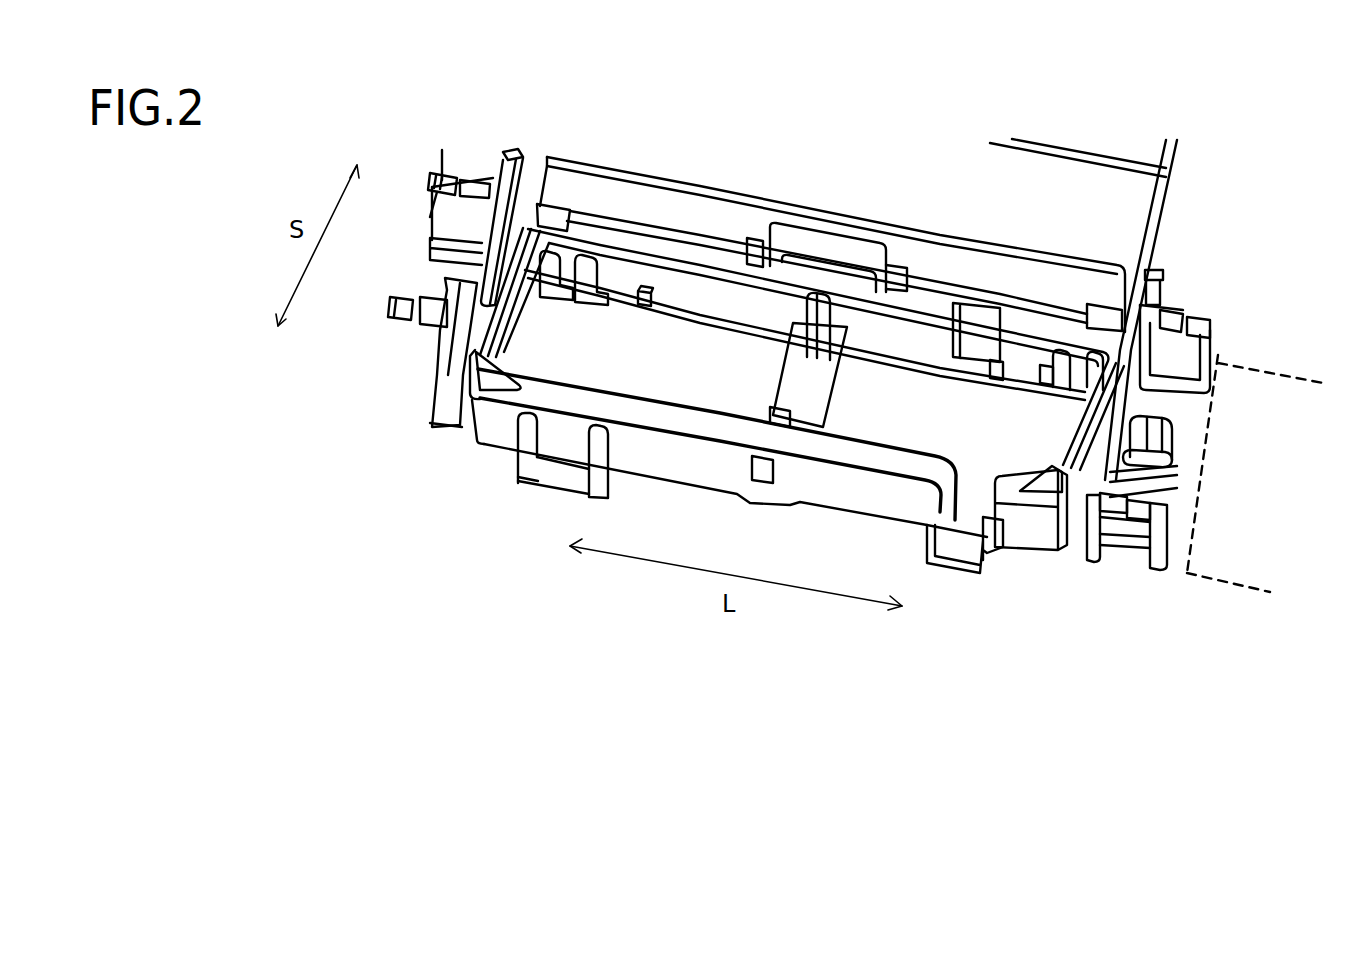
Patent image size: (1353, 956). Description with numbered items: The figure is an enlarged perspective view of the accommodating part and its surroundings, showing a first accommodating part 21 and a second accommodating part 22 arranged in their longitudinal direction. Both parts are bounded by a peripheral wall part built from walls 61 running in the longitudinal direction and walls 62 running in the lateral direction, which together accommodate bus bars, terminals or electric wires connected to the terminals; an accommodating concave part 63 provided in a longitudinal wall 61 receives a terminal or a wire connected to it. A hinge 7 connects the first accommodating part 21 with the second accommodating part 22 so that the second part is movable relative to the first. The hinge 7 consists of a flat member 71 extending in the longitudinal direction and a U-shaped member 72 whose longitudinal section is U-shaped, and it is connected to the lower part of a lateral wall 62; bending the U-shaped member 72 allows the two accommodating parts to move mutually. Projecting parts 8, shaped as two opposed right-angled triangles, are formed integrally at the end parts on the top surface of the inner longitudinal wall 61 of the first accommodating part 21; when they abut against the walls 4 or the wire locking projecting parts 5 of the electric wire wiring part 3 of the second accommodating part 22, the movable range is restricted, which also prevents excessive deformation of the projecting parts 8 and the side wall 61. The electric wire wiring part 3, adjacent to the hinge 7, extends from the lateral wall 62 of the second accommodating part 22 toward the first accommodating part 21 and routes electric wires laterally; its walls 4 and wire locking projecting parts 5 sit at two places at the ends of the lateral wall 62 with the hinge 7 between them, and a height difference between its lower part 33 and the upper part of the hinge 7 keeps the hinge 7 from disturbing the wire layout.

The electric wire wiring part 3 is at (418, 367).
The wall 4 is at (507, 177).
The wire locking projecting part 5 is at (437, 173).
The wall in the longitudinal direction 61 is at (685, 465).
The wall in the lateral direction 62 is at (517, 313).
The accommodating concave part 63 is at (953, 547).
The hinge 7 is at (1160, 440).
The flat member 71 is at (508, 362).
The U-shaped member 72 is at (447, 277).
The projecting part 8 is at (488, 378).
The first accommodating part 21 is at (823, 329).
The second accommodating part 22 is at (1257, 473).
The lower part 33 is at (1160, 505).